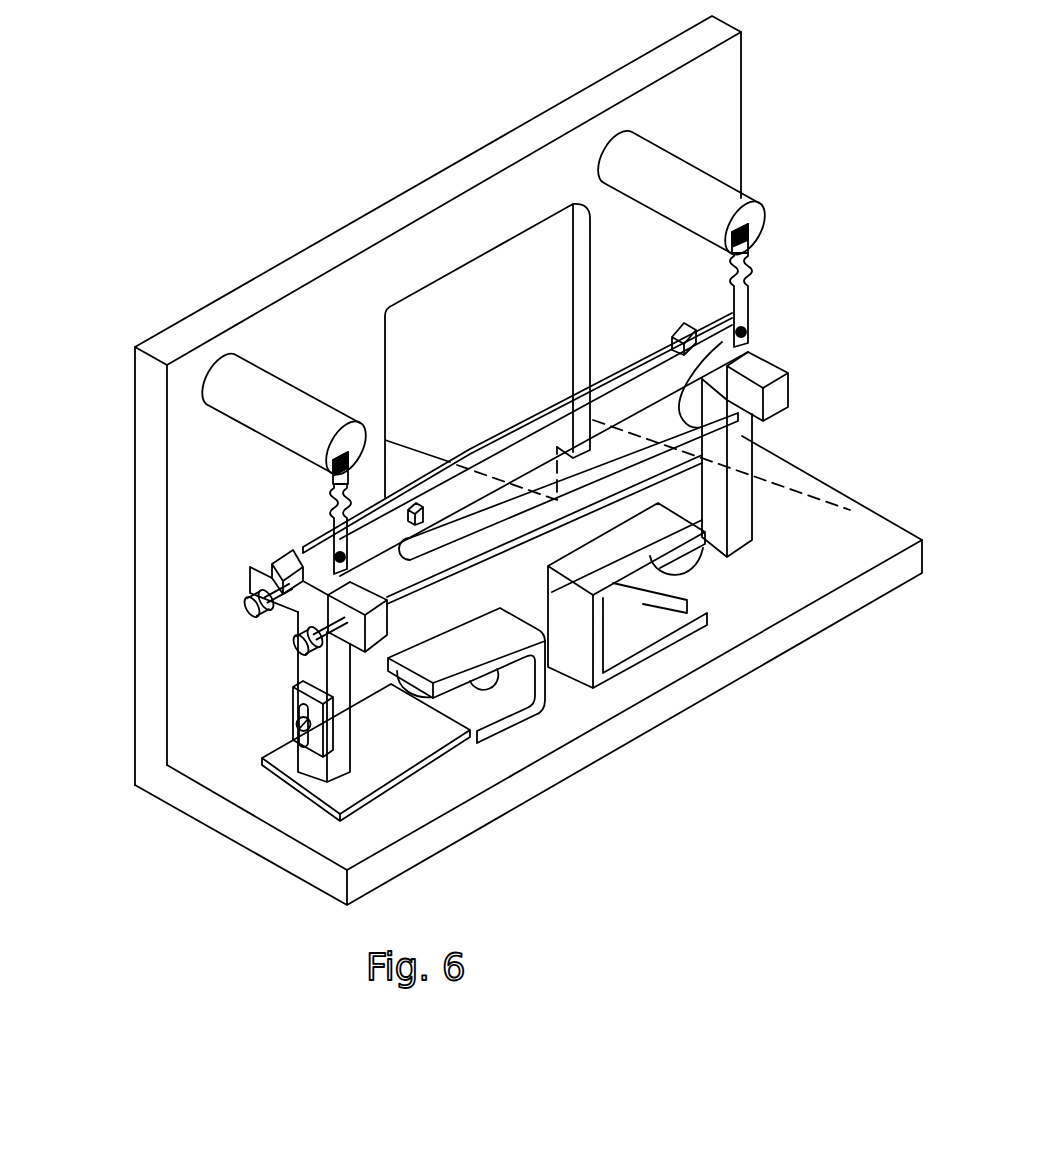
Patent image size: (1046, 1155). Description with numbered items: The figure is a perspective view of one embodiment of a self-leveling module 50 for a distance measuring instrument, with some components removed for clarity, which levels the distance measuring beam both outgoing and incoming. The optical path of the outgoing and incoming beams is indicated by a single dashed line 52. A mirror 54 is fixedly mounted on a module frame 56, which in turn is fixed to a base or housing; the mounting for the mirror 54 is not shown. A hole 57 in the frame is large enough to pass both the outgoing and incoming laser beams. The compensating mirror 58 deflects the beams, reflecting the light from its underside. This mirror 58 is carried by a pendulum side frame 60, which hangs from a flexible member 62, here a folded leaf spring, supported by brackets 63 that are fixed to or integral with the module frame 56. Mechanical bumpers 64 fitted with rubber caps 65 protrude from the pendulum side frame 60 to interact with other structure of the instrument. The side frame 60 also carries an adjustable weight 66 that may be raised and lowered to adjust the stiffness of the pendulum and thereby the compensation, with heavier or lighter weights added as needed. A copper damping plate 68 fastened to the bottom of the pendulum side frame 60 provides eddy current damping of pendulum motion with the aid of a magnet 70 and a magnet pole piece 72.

The self-leveling module 50 is at (162, 227).
The dashed line 52 is at (822, 494).
The mirror 54 is at (750, 320).
The module frame 56 is at (650, 51).
The hole 57 is at (585, 278).
The compensating mirror 58 is at (630, 372).
The pendulum side frame 60 is at (303, 547).
The flexible member 62 is at (333, 497).
The brackets 63 is at (681, 158).
The mechanical bumpers 64 is at (273, 563).
The rubber caps 65 is at (243, 609).
The adjustable weight 66 is at (292, 698).
The copper damping plate 68 is at (267, 775).
The magnet 70 is at (403, 693).
The magnet pole piece 72 is at (492, 730).